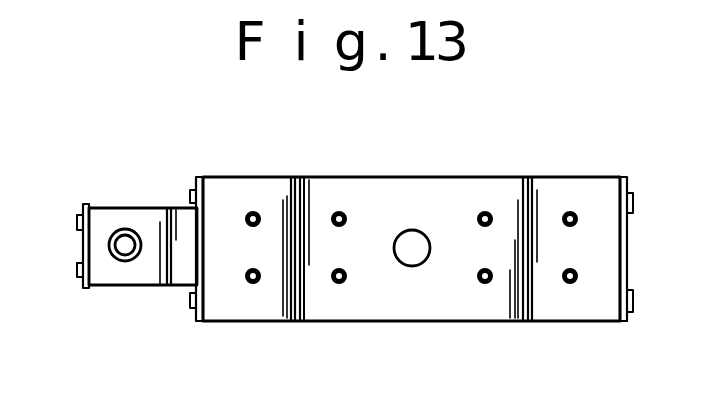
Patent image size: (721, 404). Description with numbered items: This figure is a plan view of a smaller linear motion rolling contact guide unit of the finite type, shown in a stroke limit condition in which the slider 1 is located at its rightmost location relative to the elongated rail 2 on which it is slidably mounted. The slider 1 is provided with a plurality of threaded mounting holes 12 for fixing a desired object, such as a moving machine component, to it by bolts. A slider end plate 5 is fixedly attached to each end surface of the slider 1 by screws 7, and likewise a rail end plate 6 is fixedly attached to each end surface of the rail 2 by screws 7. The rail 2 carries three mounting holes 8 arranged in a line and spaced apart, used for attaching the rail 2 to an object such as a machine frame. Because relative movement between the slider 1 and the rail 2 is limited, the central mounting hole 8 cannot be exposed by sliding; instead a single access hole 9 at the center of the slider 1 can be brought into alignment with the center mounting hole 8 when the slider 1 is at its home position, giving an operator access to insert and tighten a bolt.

The slider 1 is at (487, 177).
The rail 2 is at (177, 270).
The slider end plate 5 is at (199, 178).
The rail end plate 6 is at (84, 290).
The screws 7 is at (193, 195).
The mounting holes 8 is at (125, 261).
The access hole 9 is at (415, 267).
The mounting holes 12 is at (343, 211).